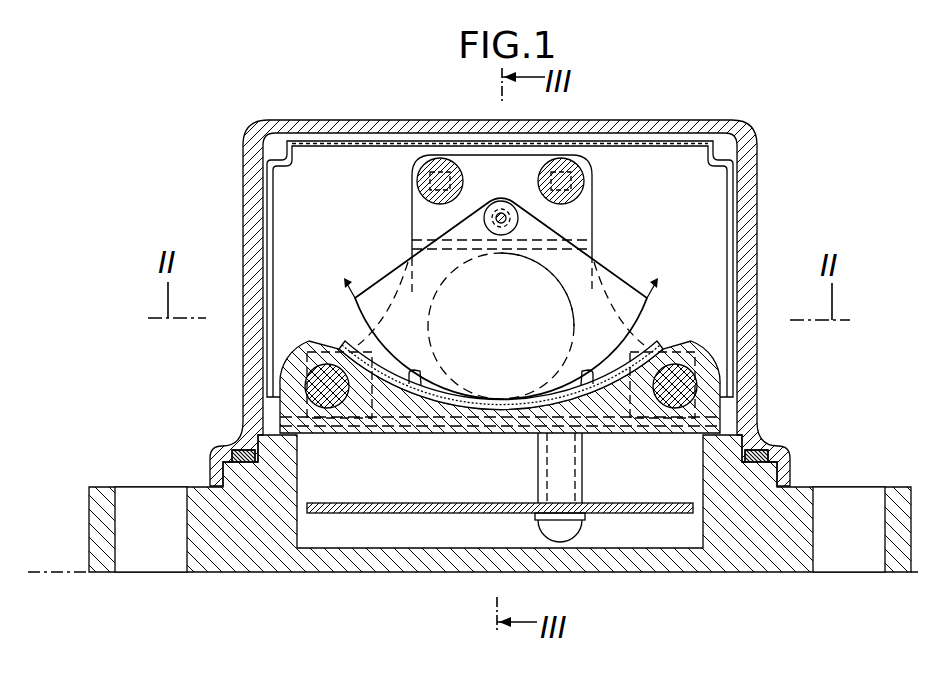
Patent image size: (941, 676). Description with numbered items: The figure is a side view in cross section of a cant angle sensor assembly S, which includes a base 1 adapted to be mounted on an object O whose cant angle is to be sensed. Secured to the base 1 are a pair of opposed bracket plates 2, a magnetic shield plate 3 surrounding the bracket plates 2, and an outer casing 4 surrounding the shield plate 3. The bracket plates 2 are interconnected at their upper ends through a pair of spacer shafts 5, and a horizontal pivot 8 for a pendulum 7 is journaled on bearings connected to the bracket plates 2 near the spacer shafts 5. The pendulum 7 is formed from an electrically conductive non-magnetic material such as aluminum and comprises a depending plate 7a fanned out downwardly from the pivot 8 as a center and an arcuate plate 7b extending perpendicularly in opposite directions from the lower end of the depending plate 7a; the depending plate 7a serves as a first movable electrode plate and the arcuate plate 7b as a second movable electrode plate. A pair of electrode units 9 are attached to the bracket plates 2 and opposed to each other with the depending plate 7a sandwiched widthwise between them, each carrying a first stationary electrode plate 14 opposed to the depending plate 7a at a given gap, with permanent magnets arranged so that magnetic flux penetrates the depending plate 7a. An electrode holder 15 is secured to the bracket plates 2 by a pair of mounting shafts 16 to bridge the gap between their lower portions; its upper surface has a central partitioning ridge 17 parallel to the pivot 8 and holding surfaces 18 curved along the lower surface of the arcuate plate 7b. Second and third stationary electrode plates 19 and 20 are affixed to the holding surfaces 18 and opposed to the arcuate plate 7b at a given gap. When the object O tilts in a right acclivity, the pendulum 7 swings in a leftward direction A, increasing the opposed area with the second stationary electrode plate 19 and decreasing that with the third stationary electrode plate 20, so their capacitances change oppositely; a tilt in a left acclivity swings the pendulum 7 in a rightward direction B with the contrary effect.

The base 1 is at (240, 565).
The bracket plates 2 is at (592, 218).
The magnetic shield plate 3 is at (331, 150).
The outer casing 4 is at (331, 118).
The spacer shafts 5 is at (606, 181).
The pendulum 7 is at (606, 278).
The depending plate 7a is at (377, 290).
The arcuate plate 7b is at (501, 400).
The horizontal pivot 8 is at (501, 213).
The electrode units 9 is at (572, 310).
The first stationary electrode plate 14 is at (563, 262).
The electrode holder 15 is at (410, 420).
The mounting shafts 16 is at (675, 378).
The partitioning ridge 17 is at (501, 408).
The holding surfaces 18 is at (405, 367).
The second stationary electrode plate 19 is at (413, 371).
The third stationary electrode plate 20 is at (589, 371).
The cant angle sensor assembly S is at (746, 122).
The leftward direction A is at (337, 295).
The rightward direction B is at (665, 296).
The object O is at (473, 550).